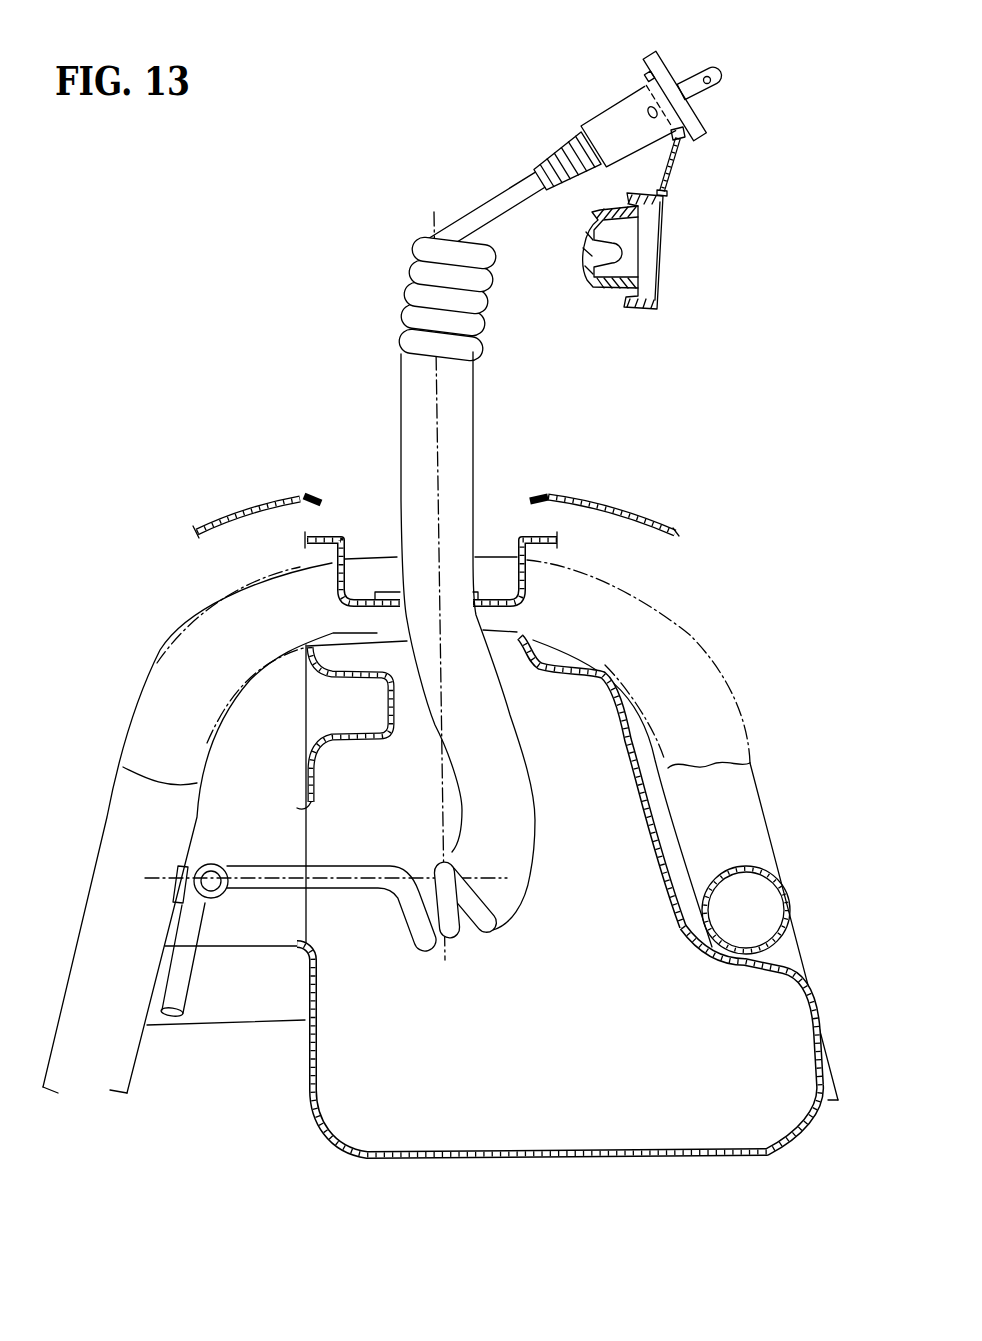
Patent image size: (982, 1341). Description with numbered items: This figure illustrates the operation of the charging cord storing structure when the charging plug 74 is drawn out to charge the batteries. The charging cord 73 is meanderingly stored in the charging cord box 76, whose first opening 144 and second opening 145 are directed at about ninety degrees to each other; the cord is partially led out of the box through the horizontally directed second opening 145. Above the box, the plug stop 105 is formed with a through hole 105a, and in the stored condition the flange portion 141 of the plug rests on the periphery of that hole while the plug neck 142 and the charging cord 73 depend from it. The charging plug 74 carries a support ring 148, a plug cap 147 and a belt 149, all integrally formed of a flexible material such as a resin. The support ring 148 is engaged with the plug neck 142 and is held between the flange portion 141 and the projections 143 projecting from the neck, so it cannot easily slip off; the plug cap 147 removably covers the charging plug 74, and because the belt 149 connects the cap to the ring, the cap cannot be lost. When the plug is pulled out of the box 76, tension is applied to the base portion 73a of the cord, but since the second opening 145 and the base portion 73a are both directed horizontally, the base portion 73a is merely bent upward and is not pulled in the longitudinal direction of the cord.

The charging cord 73 is at (487, 340).
The base portion 73a is at (320, 897).
The charging plug 74 is at (705, 66).
The charging cord box 76 is at (570, 1162).
The plug stop 105 is at (333, 560).
The through hole 105a is at (393, 575).
The flange portion 141 is at (643, 57).
The plug neck 142 is at (613, 107).
The projections 143 is at (647, 108).
The first opening 144 is at (517, 632).
The second opening 145 is at (311, 815).
The plug cap 147 is at (650, 312).
The support ring 148 is at (680, 140).
The belt 149 is at (670, 167).